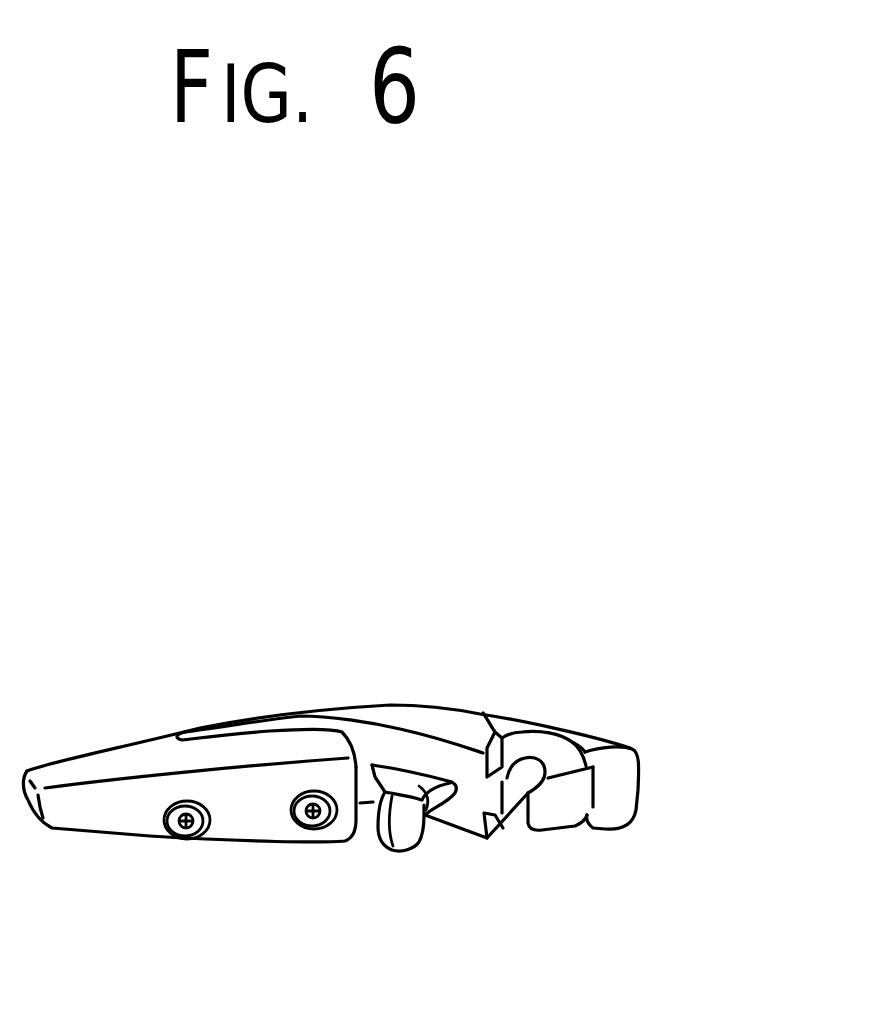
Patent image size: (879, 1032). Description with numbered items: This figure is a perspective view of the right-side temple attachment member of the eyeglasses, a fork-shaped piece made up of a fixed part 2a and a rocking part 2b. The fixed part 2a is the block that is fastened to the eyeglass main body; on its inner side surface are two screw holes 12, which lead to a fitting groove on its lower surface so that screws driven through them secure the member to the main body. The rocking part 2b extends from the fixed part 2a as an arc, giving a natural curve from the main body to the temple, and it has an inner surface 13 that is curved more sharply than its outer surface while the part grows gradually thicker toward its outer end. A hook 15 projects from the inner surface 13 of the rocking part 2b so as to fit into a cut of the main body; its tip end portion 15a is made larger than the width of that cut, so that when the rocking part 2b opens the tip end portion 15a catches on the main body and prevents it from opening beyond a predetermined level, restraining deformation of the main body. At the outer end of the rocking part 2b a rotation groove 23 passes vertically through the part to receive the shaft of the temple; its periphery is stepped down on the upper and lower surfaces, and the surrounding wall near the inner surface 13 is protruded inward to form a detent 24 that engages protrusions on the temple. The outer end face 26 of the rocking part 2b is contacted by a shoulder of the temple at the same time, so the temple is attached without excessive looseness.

The fixed part 2a is at (90, 817).
The rocking part 2b is at (418, 712).
The screw holes 12 is at (183, 825).
The inner surface 13 is at (385, 744).
The hook 15 is at (442, 816).
The tip end portion 15a is at (405, 843).
The rotation groove 23 is at (533, 767).
The detent 24 is at (490, 740).
The outer end face 26 is at (627, 772).